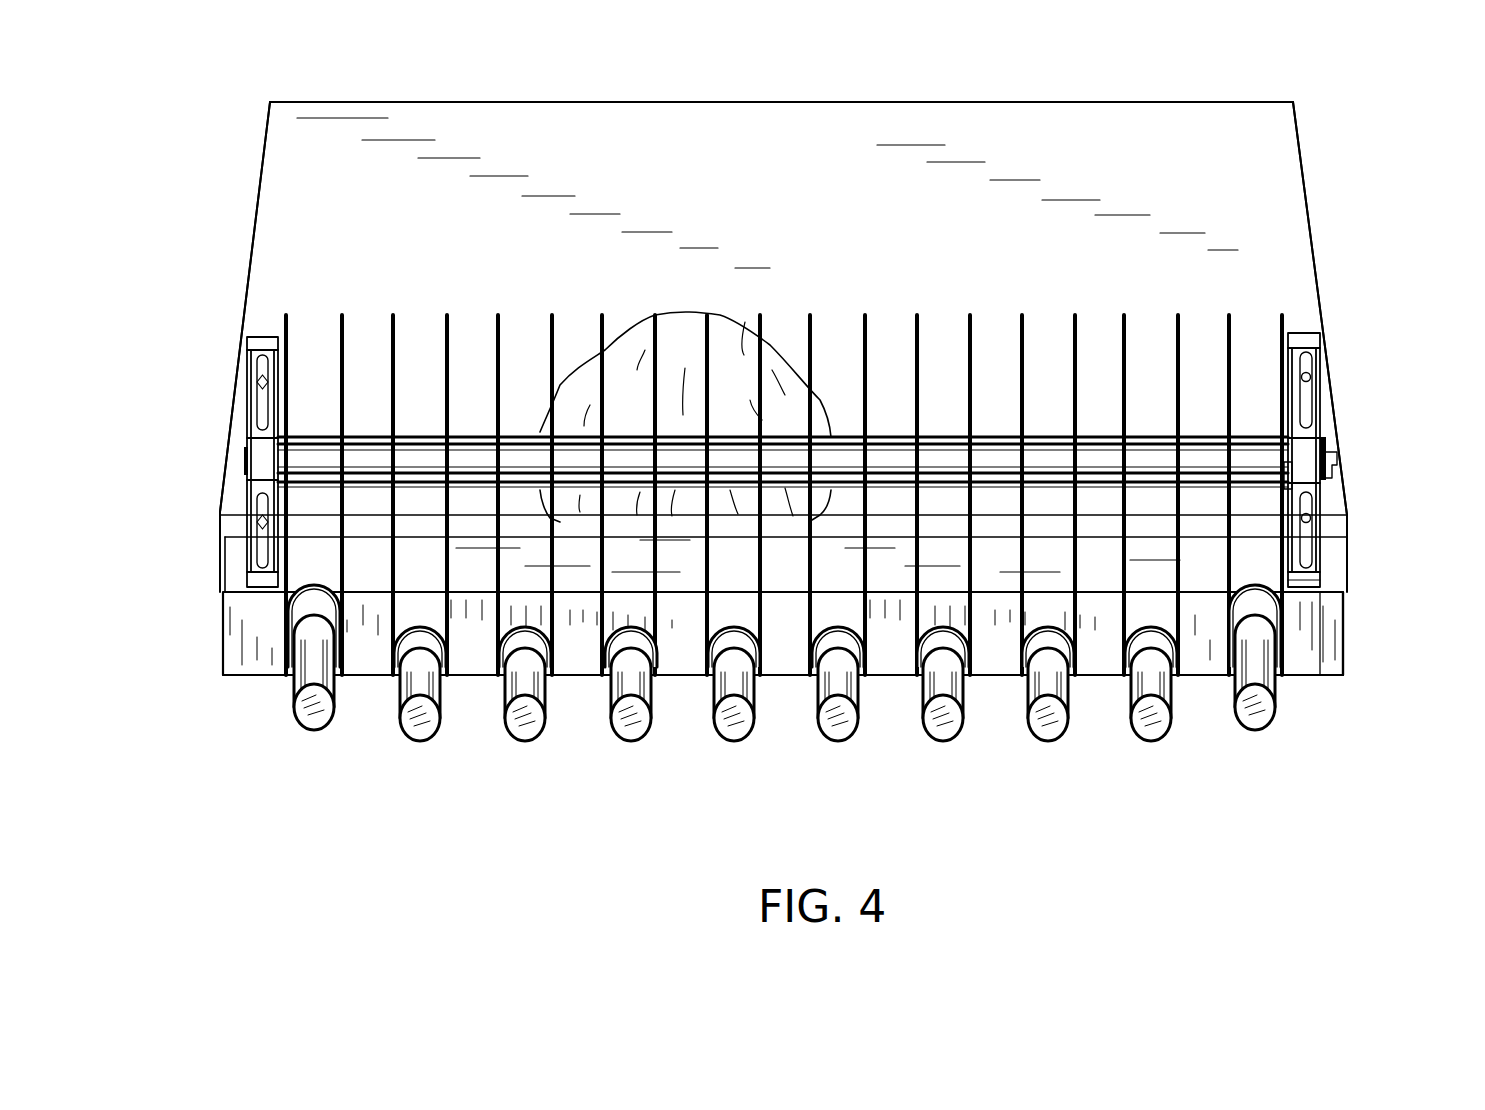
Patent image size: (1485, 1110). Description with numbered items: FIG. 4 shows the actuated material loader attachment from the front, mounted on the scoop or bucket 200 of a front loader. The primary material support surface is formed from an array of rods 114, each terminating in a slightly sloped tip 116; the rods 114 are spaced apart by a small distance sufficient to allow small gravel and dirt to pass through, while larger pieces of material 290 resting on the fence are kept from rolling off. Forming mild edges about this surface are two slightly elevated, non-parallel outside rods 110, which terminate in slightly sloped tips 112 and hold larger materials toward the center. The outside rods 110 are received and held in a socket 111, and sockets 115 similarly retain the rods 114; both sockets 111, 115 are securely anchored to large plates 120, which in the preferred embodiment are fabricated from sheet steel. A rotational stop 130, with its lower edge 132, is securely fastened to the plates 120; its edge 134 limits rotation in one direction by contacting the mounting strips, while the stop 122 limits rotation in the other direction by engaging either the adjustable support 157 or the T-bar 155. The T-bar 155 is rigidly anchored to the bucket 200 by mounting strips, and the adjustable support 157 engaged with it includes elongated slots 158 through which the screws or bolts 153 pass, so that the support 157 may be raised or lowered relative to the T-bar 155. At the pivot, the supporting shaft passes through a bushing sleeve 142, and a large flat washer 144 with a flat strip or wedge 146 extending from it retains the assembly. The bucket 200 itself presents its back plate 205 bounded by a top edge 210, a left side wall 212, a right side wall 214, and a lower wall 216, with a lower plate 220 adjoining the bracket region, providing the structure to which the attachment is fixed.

The non-parallel rods 110 is at (824, 692).
The socket 111 is at (1336, 638).
The slightly sloped tips 112 is at (1294, 721).
The rods 114 is at (1098, 713).
The sockets 115 is at (1187, 689).
The slightly sloped tips 116 is at (1191, 747).
The plates 120 is at (447, 327).
The stop 122 is at (1322, 482).
The rotational stop 130 is at (1343, 650).
The frame bottom edge 132 is at (1343, 675).
The edge 134 is at (1312, 582).
The bushing sleeve 142 is at (1305, 443).
The flat washer 144 is at (1326, 452).
The flat strip or wedge 146 is at (1332, 467).
The bolts 153 is at (1311, 378).
The T-bar 155 is at (1312, 338).
The adjustable support 157 is at (1312, 492).
The elongated slots 158 is at (1312, 362).
The bucket 200 is at (1300, 112).
The back plate 205 is at (732, 179).
The top edge 210 is at (899, 100).
The left side wall 212 is at (257, 207).
The right side wall 214 is at (1303, 172).
The lower wall 216 is at (1338, 527).
The lower slot plate 220 is at (1312, 555).
The debris 290 is at (738, 322).